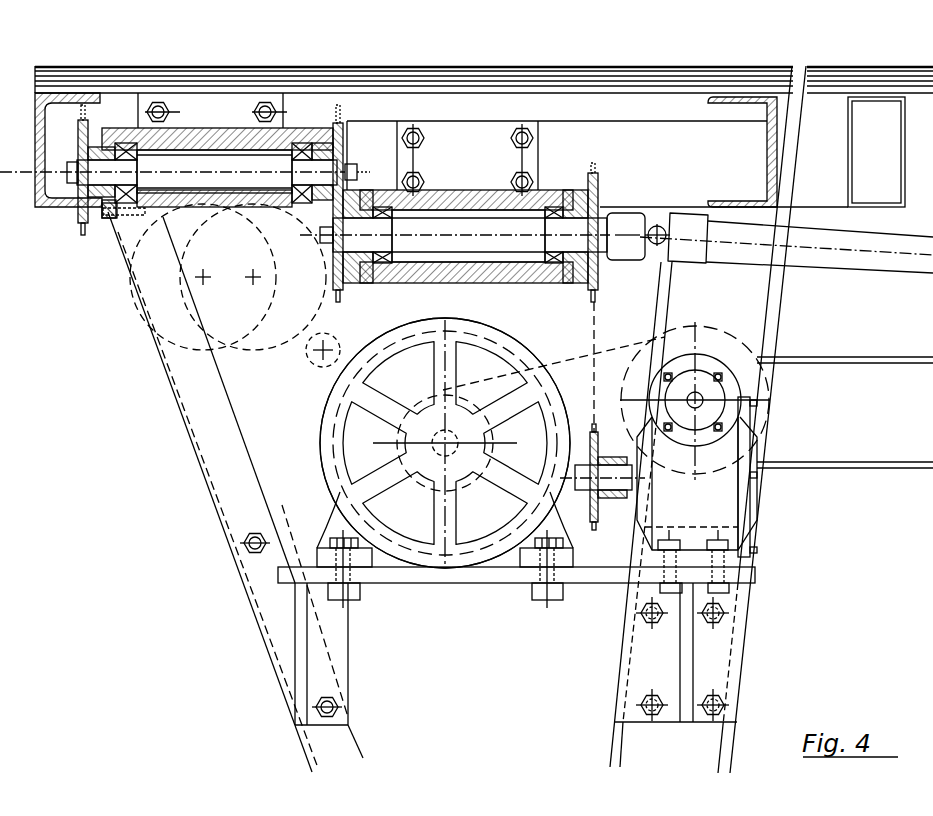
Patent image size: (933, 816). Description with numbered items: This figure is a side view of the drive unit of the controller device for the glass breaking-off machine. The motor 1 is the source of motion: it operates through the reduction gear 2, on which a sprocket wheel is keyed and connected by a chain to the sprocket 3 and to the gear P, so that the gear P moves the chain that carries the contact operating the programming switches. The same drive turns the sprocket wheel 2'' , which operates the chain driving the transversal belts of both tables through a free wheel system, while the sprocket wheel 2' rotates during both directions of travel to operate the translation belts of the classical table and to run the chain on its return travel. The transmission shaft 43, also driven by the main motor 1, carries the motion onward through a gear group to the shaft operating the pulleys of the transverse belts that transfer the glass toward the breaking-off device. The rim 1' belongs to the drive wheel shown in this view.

The motor 1 is at (470, 443).
The wheel rim 1' is at (445, 439).
The reduction gear 2 is at (776, 457).
The sprocket wheel 2' is at (602, 490).
The sprocket wheel 2'' is at (595, 461).
The sprocket 3 is at (599, 286).
The transmission shaft 43 is at (879, 262).
The gear P is at (98, 222).